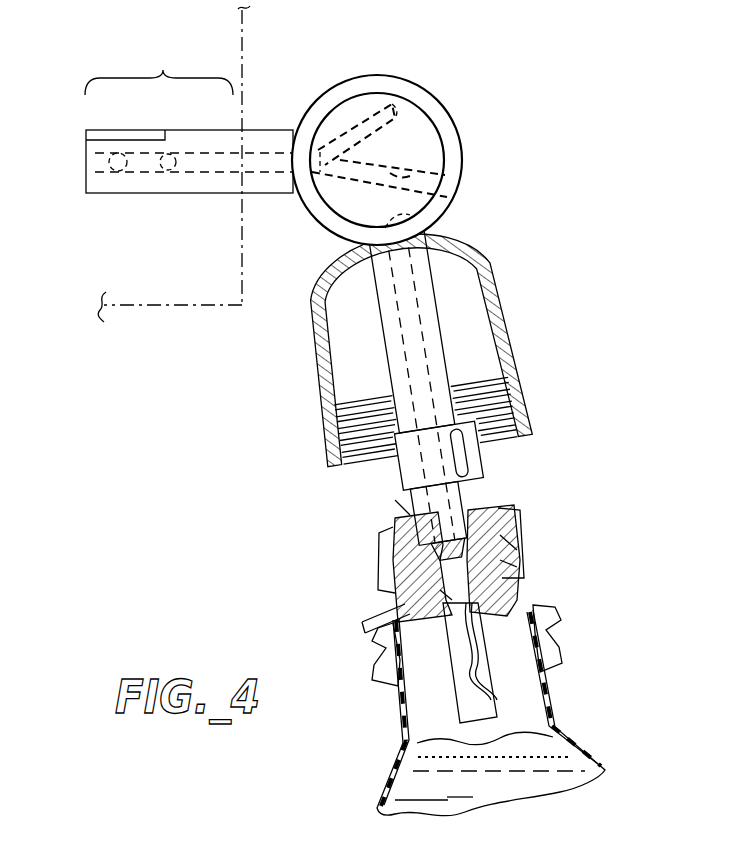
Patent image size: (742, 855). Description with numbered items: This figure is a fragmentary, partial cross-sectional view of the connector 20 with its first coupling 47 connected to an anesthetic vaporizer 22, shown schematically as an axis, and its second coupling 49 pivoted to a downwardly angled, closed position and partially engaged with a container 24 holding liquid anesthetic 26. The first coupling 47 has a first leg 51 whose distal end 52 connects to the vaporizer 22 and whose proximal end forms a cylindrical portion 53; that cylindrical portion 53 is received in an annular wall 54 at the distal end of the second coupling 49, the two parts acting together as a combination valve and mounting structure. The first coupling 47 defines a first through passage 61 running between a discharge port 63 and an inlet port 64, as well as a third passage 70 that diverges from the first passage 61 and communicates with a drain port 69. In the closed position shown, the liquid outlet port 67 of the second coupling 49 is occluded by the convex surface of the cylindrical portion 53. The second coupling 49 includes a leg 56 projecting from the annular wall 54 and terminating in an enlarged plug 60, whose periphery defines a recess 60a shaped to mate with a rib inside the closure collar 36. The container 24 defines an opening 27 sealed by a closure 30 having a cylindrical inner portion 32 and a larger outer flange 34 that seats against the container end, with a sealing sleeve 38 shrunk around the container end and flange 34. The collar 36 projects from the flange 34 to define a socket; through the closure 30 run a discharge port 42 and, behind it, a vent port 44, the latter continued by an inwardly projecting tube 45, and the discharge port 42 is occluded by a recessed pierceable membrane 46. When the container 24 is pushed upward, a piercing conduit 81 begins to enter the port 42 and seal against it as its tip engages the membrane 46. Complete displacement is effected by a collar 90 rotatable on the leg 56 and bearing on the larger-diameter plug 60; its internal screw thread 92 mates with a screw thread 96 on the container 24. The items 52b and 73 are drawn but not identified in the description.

The connector 20 is at (568, 138).
The anesthetic vaporizer 22 is at (250, 58).
The container 24 is at (562, 667).
The liquid anesthetic 26 is at (490, 766).
The opening or discharge port 27 is at (405, 618).
The closure 30 is at (500, 610).
The cylindrical inner portion 32 is at (402, 578).
The outer flange 34 is at (380, 542).
The collar 36 is at (439, 523).
The sealing sleeve, band, or ferrule 38 is at (373, 556).
The port 42 is at (517, 550).
The port 44 is at (517, 567).
The inwardly projecting tube 45 is at (490, 673).
The pierceable diaphragm or membrane 46 is at (420, 600).
The first coupling 47 is at (185, 196).
The second coupling 49 is at (419, 378).
The first leg 51 is at (237, 184).
The distal end 52 is at (163, 70).
The grip step 52b is at (128, 135).
The cylindrical portion 53 is at (425, 135).
The annular wall 54 is at (330, 100).
The leg 56 is at (413, 343).
The boss or plug 60 is at (439, 455).
The recess 60a is at (459, 452).
The first through passage 61 is at (400, 105).
The discharge port 63 is at (112, 168).
The inlet port 64 is at (428, 94).
The outlet port 67 is at (420, 220).
The drain port 69 is at (455, 193).
The third passage 70 is at (448, 166).
The pin hole 73 is at (158, 168).
The piercing conduit 81 is at (410, 515).
The collar 90 is at (300, 308).
The screw thread 92 is at (425, 420).
The mating screw thread 96 is at (557, 638).